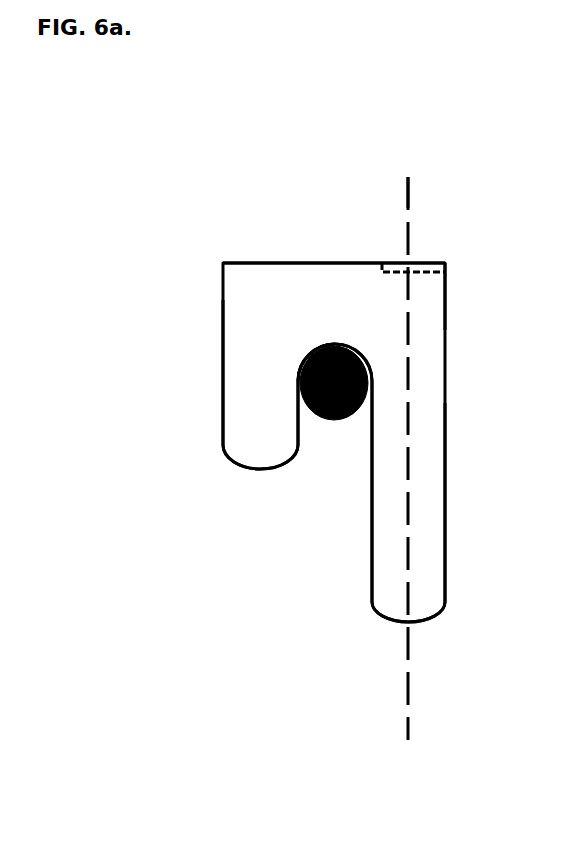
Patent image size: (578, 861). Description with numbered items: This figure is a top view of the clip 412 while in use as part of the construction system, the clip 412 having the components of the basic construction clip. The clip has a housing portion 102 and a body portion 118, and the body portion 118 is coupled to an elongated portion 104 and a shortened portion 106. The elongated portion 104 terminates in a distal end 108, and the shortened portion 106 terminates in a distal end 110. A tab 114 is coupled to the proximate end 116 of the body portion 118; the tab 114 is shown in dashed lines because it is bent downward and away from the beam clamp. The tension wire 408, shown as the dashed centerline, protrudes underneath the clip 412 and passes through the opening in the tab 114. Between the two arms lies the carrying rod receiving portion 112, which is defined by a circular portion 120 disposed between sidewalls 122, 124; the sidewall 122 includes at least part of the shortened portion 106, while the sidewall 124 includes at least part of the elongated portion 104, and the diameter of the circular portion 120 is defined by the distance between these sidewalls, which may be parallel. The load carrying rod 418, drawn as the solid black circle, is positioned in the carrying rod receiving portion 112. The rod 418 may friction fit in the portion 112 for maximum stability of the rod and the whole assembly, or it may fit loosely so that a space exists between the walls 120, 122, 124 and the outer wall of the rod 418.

The housing portion 102 is at (447, 403).
The elongated portion 104 is at (447, 528).
The shortened portion 106 is at (222, 393).
The distal end 108 is at (432, 623).
The distal end 110 is at (257, 472).
The carrying rod receiving portion 112 is at (360, 350).
The tab 114 is at (432, 262).
The proximate end 116 is at (333, 263).
The body portion 118 is at (453, 310).
The circular portion 120 is at (315, 347).
The sidewall 122 is at (297, 407).
The sidewall 124 is at (375, 388).
The tension wire 408 is at (408, 742).
The clip 412 is at (455, 156).
The load carrying rod 418 is at (335, 420).